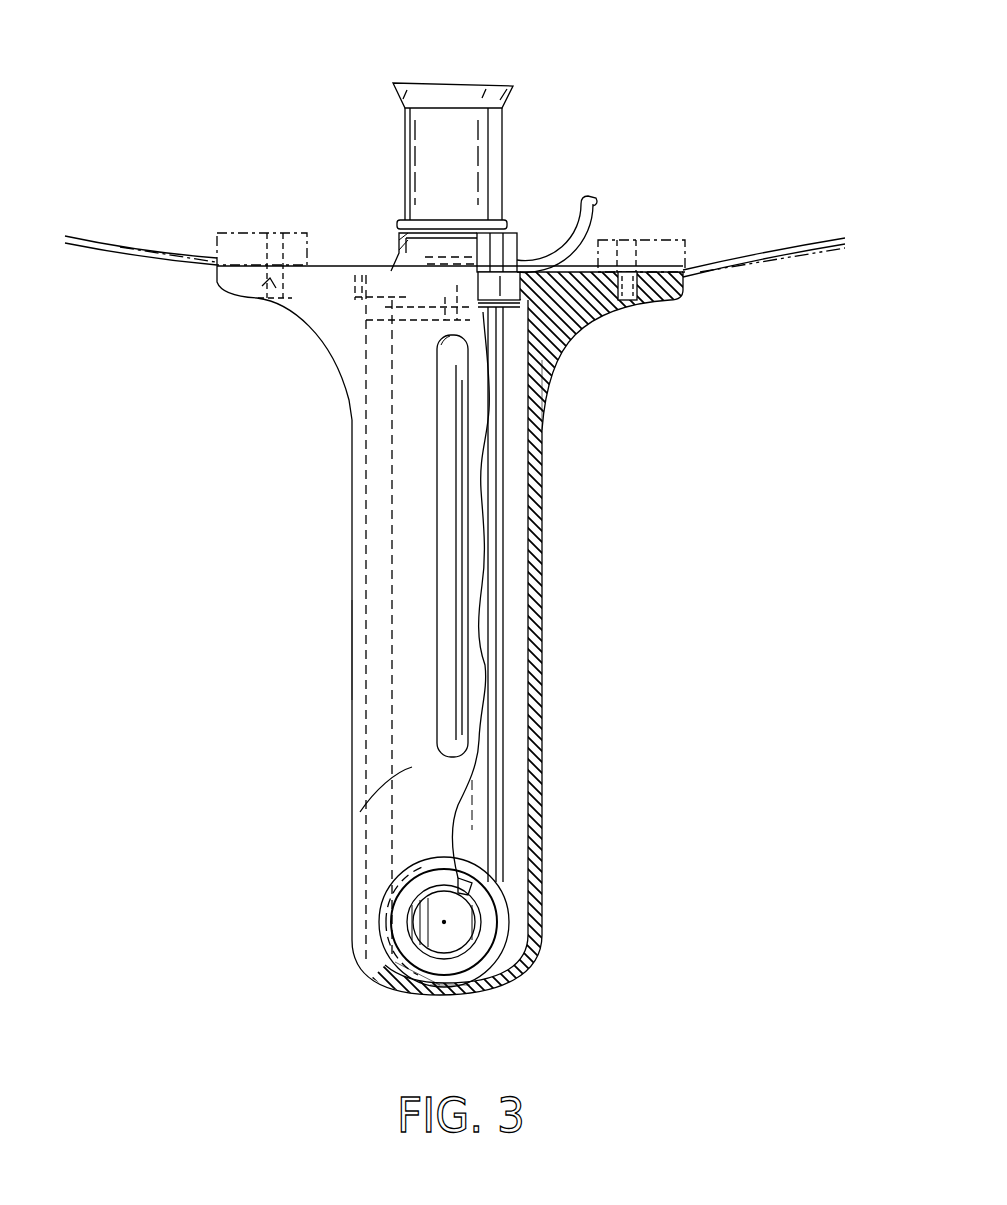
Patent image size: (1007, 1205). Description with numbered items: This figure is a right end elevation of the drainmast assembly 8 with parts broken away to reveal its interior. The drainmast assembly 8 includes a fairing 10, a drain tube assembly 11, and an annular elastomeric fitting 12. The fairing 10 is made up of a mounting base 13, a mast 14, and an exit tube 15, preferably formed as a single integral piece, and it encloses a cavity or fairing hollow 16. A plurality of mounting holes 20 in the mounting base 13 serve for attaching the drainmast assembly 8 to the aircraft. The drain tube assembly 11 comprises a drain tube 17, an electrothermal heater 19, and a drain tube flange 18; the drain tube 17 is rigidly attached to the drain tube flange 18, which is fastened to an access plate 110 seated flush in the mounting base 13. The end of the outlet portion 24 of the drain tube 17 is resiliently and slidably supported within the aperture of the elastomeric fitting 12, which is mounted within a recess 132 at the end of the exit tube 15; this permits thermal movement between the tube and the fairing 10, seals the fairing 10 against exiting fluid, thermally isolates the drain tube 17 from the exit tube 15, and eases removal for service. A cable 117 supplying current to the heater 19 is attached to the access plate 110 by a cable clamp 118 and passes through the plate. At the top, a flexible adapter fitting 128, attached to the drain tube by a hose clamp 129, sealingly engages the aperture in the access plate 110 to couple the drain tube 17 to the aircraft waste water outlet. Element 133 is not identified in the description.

The drainmast assembly 8 is at (268, 754).
The fairing 10 is at (348, 593).
The drain tube assembly 11 is at (506, 773).
The elastomeric fitting 12 is at (403, 946).
The mounting base 13 is at (688, 281).
The mast 14 is at (548, 512).
The exit tube 15 is at (380, 868).
The fairing hollow 16 is at (513, 663).
The drain tube 17 is at (487, 892).
The drain tube flange 18 is at (552, 387).
The electrothermal heater 19 is at (509, 913).
The mounting holes 20 is at (270, 288).
The outlet portion 24 is at (476, 948).
The access plate 110 is at (542, 292).
The cable 117 is at (570, 212).
The cable clamp 118 is at (505, 245).
The adapter fitting 128 is at (434, 90).
The hose clamp 129 is at (398, 242).
The recess 132 is at (413, 952).
The bottom wall portion 133 is at (443, 998).